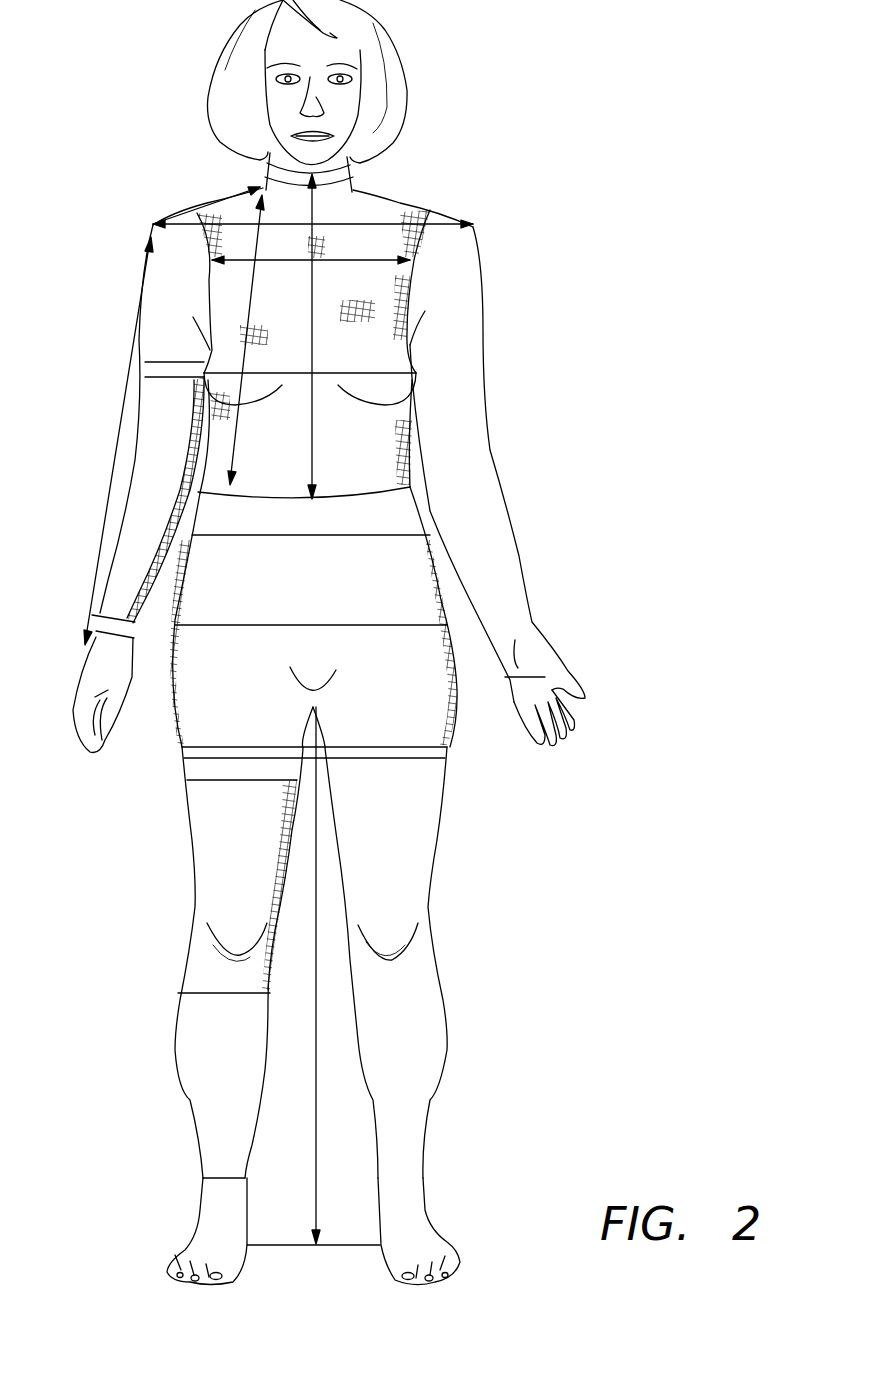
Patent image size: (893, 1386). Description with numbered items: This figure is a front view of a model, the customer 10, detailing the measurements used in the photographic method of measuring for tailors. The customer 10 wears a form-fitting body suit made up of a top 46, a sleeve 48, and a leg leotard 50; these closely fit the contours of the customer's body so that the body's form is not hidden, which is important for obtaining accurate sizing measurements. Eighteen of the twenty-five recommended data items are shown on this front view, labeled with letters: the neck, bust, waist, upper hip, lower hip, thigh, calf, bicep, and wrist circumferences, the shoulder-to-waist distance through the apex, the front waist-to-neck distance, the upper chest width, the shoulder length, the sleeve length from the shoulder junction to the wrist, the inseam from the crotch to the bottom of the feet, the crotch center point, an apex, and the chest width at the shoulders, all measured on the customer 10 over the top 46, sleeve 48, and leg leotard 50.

The customer 10 is at (527, 125).
The top 46 is at (327, 577).
The sleeve 48 is at (159, 513).
The leg leotard 50 is at (251, 885).